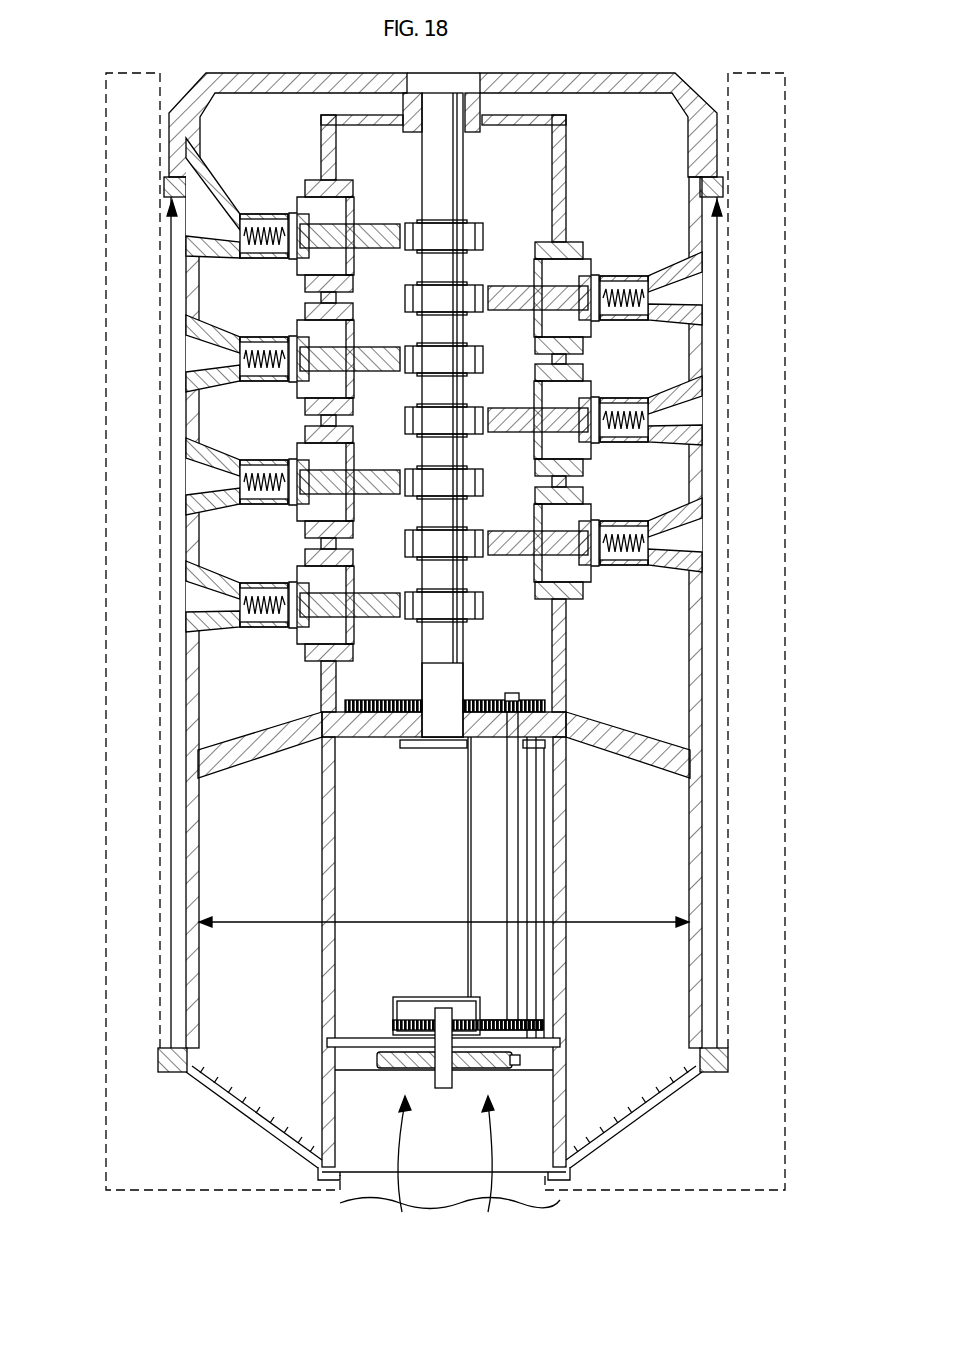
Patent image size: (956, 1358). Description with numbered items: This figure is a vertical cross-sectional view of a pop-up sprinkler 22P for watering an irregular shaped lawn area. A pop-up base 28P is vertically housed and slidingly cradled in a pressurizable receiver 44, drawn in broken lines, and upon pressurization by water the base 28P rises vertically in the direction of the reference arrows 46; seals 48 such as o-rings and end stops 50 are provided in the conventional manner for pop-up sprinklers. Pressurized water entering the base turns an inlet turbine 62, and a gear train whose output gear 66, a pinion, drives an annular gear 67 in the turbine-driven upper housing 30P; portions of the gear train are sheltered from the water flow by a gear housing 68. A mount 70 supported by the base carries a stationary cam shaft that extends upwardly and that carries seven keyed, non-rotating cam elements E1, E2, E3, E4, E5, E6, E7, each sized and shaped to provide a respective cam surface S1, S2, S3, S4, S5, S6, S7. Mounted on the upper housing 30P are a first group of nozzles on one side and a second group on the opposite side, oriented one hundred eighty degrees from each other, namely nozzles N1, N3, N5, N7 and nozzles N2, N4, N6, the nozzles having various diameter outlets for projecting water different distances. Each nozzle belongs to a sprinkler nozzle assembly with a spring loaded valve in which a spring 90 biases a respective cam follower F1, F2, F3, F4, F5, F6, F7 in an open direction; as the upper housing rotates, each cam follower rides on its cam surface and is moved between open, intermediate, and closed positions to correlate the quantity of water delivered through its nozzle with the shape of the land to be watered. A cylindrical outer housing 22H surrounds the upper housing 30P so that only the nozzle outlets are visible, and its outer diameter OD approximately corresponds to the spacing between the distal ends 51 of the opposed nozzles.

The pop-up sprinkler 22P is at (640, 50).
The outer housing 22H is at (186, 722).
The pop-up base 28P is at (186, 962).
The upper housing 30P is at (323, 138).
The pressurizable receiver 44 is at (106, 468).
The reference arrows 46 is at (186, 430).
The seals 48 is at (164, 185).
The end stops 50 is at (160, 1058).
The distal ends of nozzles 51 is at (185, 242).
The inlet turbine 62 is at (395, 1068).
The output gear 66 is at (535, 695).
The annular gear 67 is at (362, 703).
The gear housing 68 is at (467, 838).
The mount 70 is at (388, 738).
The spring 90 is at (632, 290).
The outer diameter OD is at (598, 927).
The nozzle N1 is at (212, 200).
The nozzle N2 is at (676, 264).
The nozzle N3 is at (214, 325).
The nozzle N4 is at (676, 388).
The nozzle N5 is at (214, 448).
The nozzle N6 is at (676, 512).
The nozzle N7 is at (214, 571).
The cam follower F1 is at (340, 226).
The cam follower F2 is at (540, 288).
The cam follower F3 is at (340, 349).
The cam follower F4 is at (542, 410).
The cam follower F5 is at (340, 472).
The cam follower F6 is at (542, 533).
The cam follower F7 is at (340, 597).
The cam element E1 is at (470, 222).
The cam element E2 is at (415, 283).
The cam element E3 is at (470, 345).
The cam element E4 is at (415, 405).
The cam element E5 is at (470, 468).
The cam element E6 is at (415, 528).
The cam element E7 is at (470, 591).
The cam surface S1 is at (484, 244).
The cam surface S2 is at (405, 292).
The cam surface S3 is at (484, 367).
The cam surface S4 is at (405, 414).
The cam surface S5 is at (484, 490).
The cam surface S6 is at (405, 537).
The cam surface S7 is at (484, 613).